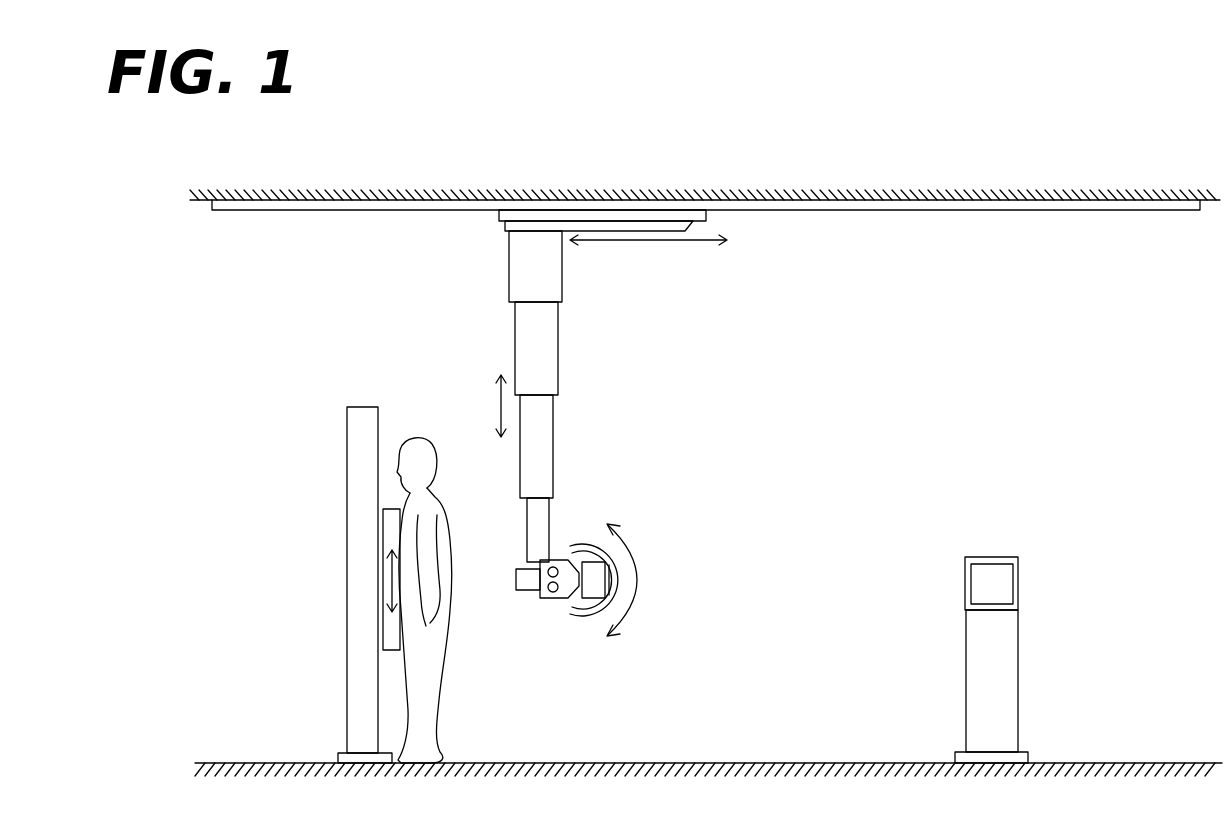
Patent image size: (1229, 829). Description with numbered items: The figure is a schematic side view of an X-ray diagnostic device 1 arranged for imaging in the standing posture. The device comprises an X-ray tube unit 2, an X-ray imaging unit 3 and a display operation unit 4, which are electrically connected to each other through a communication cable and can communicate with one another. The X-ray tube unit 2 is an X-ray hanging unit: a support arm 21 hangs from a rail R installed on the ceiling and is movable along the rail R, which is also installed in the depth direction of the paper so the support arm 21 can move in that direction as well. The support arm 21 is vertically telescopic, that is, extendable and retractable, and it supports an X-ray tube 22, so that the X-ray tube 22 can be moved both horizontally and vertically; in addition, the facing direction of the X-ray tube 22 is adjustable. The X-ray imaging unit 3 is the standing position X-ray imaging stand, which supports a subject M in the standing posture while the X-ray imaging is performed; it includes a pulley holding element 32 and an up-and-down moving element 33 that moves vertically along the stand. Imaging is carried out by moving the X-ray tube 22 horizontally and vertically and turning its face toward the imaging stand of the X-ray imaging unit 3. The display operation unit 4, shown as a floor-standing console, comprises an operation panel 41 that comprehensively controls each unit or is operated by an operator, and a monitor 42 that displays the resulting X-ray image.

The X-ray diagnostic device 1 is at (1168, 314).
The X-ray tube unit 2 is at (576, 423).
The support arm 21 is at (520, 347).
The X-ray tube 22 is at (562, 572).
The X-ray imaging unit 3 is at (344, 546).
The pulley holding element 32 is at (357, 490).
The up-and-down moving element 33 is at (383, 617).
The display operation unit 4 is at (1013, 608).
The operation panel 41 is at (1006, 690).
The monitor 42 is at (1015, 588).
The rail R is at (313, 211).
The subject M is at (443, 550).